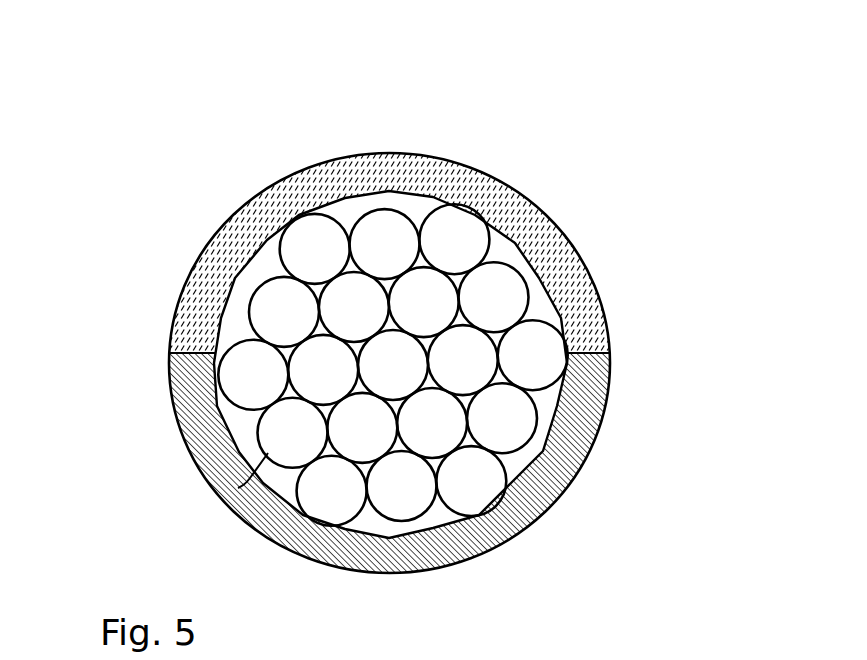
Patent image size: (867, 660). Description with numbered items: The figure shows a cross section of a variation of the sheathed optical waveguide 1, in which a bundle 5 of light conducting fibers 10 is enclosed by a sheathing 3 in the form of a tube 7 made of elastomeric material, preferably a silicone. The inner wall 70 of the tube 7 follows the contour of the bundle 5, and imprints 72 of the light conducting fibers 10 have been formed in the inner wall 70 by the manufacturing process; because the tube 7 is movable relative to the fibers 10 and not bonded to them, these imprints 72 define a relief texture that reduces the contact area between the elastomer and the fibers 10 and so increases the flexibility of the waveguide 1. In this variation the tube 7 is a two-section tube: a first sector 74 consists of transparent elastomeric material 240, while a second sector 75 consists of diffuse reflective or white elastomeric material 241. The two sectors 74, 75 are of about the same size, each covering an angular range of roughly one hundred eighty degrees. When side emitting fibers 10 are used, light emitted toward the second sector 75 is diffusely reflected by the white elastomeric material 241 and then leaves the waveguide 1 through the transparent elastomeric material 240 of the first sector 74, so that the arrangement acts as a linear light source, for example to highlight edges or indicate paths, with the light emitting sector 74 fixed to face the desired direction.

The sheathed optical waveguide 1 is at (81, 534).
The sheathing 3 is at (421, 352).
The tube 7 is at (421, 352).
The bundle 5 is at (325, 365).
The light conducting fibers 10 is at (255, 380).
The inner wall 70 is at (340, 205).
The imprints 72 is at (268, 453).
The first sector 74 is at (431, 320).
The second sector 75 is at (566, 528).
The transparent elastomeric material 240 is at (445, 246).
The white elastomeric material 241 is at (459, 468).